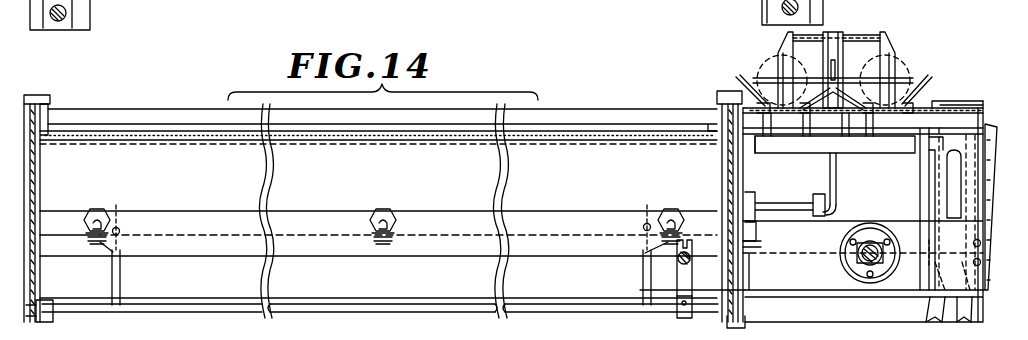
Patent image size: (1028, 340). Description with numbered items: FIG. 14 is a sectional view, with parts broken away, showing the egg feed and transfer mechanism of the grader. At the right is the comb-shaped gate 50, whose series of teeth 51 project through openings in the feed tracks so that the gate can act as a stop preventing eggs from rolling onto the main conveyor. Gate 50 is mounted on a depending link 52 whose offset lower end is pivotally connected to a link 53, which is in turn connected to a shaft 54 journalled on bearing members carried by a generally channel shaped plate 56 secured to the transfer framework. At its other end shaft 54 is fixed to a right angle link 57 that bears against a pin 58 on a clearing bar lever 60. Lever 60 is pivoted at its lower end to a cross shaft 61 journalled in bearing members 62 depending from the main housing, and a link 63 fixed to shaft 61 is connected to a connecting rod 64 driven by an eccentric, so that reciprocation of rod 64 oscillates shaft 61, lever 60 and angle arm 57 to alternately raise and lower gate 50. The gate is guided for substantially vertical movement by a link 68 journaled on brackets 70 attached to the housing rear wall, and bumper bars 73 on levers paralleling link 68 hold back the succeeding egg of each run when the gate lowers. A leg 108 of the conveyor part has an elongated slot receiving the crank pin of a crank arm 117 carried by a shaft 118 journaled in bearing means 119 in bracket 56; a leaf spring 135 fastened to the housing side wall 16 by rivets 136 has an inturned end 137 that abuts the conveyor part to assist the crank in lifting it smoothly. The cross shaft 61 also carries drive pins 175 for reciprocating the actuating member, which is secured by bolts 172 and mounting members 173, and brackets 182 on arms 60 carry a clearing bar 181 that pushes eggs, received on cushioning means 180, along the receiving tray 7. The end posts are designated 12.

The tray 7 is at (124, 143).
The end post 12 is at (40, 268).
The transfer housing side wall 16 is at (982, 236).
The gate 50 is at (801, 150).
The teeth 51 is at (896, 127).
The depending link 52 is at (838, 168).
The link 53 is at (832, 213).
The shaft 54 is at (812, 197).
The channel shaped plate 56 is at (828, 282).
The right angle link 57 is at (756, 233).
The pin 58 is at (749, 247).
The clearing bar lever 60 is at (745, 271).
The cross shaft 61 is at (535, 307).
The bearing members 62 is at (55, 308).
The link 63 is at (686, 279).
The connecting rod 64 is at (686, 261).
The link 68 is at (837, 32).
The brackets 70 is at (887, 40).
The bumper bars 73 is at (900, 80).
The leg 108 is at (930, 172).
The crank arm 117 is at (928, 250).
The shaft 118 is at (861, 255).
The bearing means 119 is at (880, 229).
The spring 135 is at (986, 184).
The rivets 136 is at (982, 284).
The inturned end 137 is at (986, 120).
The bolts 172 is at (94, 241).
The mounting members 173 is at (108, 221).
The drive arms or pins 175 is at (121, 273).
The cushioning means 180 is at (607, 132).
The clearing bar 181 is at (623, 118).
The brackets 182 is at (719, 103).